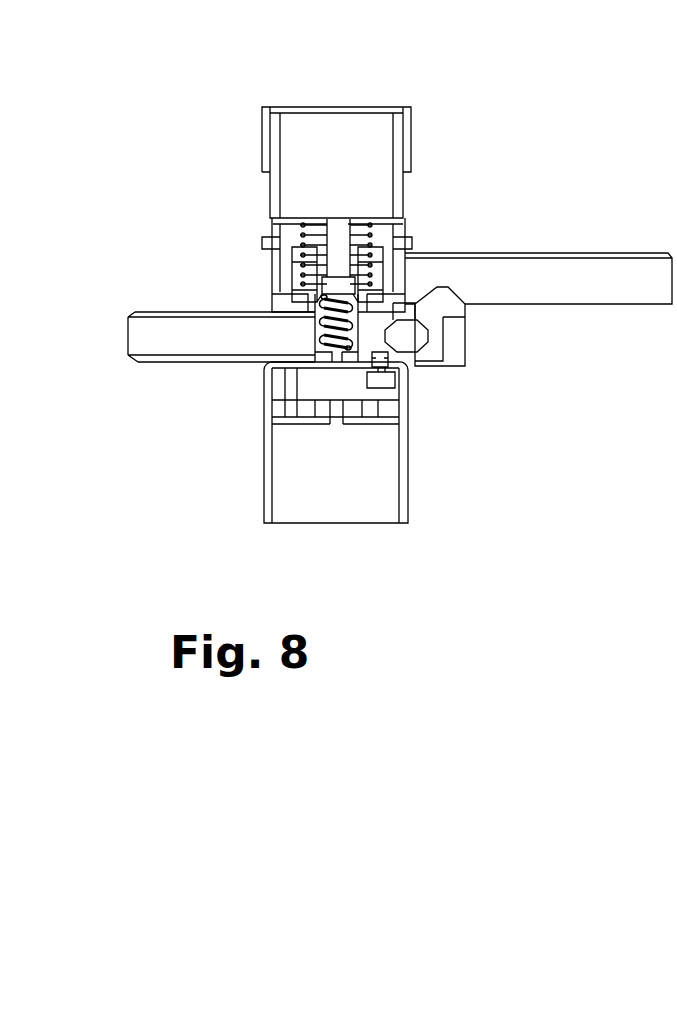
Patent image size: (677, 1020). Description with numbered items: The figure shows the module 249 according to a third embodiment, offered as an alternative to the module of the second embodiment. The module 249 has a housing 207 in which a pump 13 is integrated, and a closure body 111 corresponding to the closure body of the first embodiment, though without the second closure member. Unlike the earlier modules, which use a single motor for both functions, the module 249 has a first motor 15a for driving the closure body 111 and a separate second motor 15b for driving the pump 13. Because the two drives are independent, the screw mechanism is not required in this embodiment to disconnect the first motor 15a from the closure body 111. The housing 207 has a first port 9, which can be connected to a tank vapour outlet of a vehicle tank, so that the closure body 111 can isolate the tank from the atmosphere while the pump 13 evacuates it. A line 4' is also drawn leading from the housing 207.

The first motor 15a is at (352, 153).
The housing 207 is at (267, 267).
The closure body 111 is at (350, 330).
The first port 9 is at (168, 337).
The discharge line 4' is at (519, 286).
The second motor 15b is at (353, 485).
The module 249 is at (490, 155).
The pump 13 is at (227, 428).